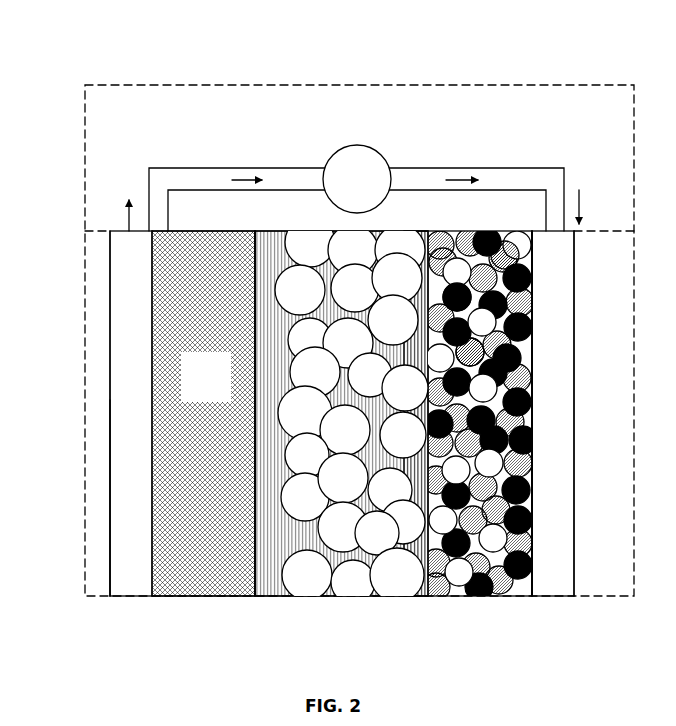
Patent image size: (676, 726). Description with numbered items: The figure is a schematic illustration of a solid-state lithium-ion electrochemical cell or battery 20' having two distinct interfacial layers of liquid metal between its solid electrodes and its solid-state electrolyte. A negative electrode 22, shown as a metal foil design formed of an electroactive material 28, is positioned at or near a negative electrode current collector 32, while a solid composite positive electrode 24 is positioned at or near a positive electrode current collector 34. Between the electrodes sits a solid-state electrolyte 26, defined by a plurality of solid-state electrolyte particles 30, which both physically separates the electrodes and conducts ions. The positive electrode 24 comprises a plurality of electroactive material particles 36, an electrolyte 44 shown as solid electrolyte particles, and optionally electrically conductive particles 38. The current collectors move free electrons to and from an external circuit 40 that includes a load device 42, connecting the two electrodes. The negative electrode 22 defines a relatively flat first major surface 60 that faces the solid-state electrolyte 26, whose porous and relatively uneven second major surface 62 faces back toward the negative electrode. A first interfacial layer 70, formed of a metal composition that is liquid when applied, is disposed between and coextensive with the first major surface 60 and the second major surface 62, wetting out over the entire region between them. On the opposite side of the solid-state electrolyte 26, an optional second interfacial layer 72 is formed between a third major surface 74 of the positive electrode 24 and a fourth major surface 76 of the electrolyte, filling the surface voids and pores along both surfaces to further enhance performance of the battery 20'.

The electrochemical cell or battery 20' is at (294, 413).
The negative electrode 22 is at (203, 413).
The positive electrode 24 is at (518, 420).
The solid-state electrolyte 26 is at (297, 429).
The electroactive material 28 is at (128, 287).
The solid-state electrolyte particles 30 is at (340, 478).
The negative electrode current collector 32 is at (130, 412).
The positive electrode current collector 34 is at (553, 395).
The electroactive material particles 36 is at (520, 302).
The electrically conductive particles 38 is at (507, 358).
The external circuit 40 is at (120, 83).
The load device 42 is at (354, 188).
The electrolyte 44 is at (453, 572).
The first major surface 60 is at (257, 308).
The second major surface 62 is at (285, 387).
The first interfacial layer 70 is at (292, 598).
The second interfacial layer 72 is at (404, 598).
The third major surface 74 is at (440, 292).
The fourth major surface 76 is at (412, 360).